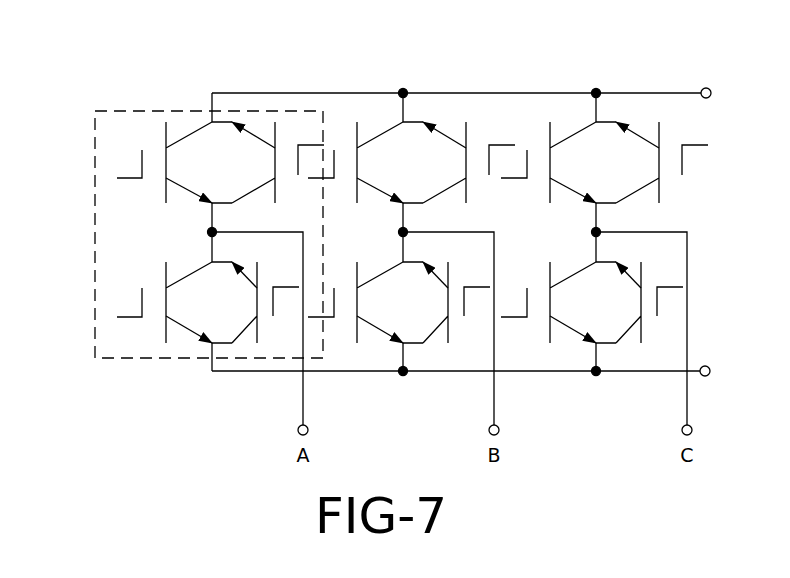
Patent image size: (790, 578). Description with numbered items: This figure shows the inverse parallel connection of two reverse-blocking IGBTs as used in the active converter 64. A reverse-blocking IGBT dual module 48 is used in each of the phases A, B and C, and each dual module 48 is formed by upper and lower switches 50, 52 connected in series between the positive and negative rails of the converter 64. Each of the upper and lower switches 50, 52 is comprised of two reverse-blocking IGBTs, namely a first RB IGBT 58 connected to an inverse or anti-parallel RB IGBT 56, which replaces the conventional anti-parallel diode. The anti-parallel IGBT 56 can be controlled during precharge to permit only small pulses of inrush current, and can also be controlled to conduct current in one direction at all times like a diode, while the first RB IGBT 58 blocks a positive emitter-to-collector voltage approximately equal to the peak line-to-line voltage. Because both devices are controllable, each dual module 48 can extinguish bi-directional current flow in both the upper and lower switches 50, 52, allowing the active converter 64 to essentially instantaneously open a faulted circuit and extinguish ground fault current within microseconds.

The RB IGBT dual module 48 is at (369, 236).
The upper switch 50 is at (177, 240).
The lower switch 52 is at (205, 313).
The anti-parallel RB IGBT 56 is at (278, 125).
The first RB IGBT 58 is at (165, 125).
The active converter 64 is at (558, 68).